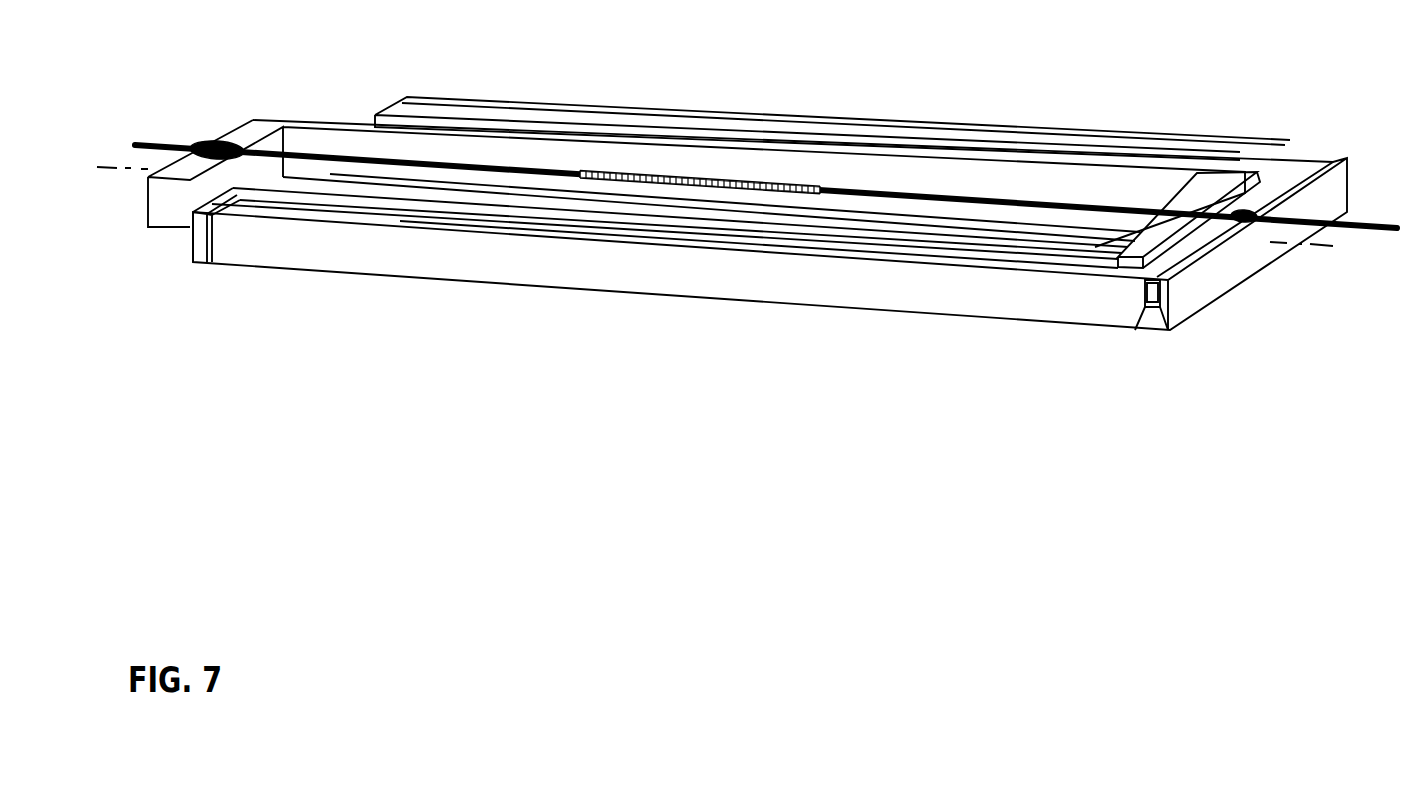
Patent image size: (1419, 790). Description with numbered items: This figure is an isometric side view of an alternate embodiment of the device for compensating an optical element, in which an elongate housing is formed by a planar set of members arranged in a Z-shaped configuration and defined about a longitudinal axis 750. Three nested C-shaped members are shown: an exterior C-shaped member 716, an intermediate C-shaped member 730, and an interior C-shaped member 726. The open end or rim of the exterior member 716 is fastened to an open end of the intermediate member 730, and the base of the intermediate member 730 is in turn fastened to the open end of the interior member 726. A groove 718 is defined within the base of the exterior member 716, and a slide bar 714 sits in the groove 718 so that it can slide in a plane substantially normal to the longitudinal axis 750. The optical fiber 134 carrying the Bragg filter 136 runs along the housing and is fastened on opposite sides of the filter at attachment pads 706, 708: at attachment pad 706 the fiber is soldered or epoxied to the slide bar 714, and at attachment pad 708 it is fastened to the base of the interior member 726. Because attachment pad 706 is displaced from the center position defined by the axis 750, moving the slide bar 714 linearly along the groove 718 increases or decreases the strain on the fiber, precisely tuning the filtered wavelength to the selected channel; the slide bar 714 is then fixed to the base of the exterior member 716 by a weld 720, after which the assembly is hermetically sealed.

The optical fiber 134 is at (1373, 228).
The fiber Bragg grating 136 is at (722, 183).
The attachment pad 706 is at (1247, 227).
The attachment pad 708 is at (233, 138).
The slide bar 714 is at (1150, 300).
The exterior "C" shaped member 716 is at (493, 105).
The groove 718 is at (1167, 332).
The weld 720 is at (1333, 160).
The interior "C" shaped member 726 is at (253, 127).
The intermediate "C" shaped member 730 is at (1208, 183).
The longitudinal axis 750 is at (1313, 243).